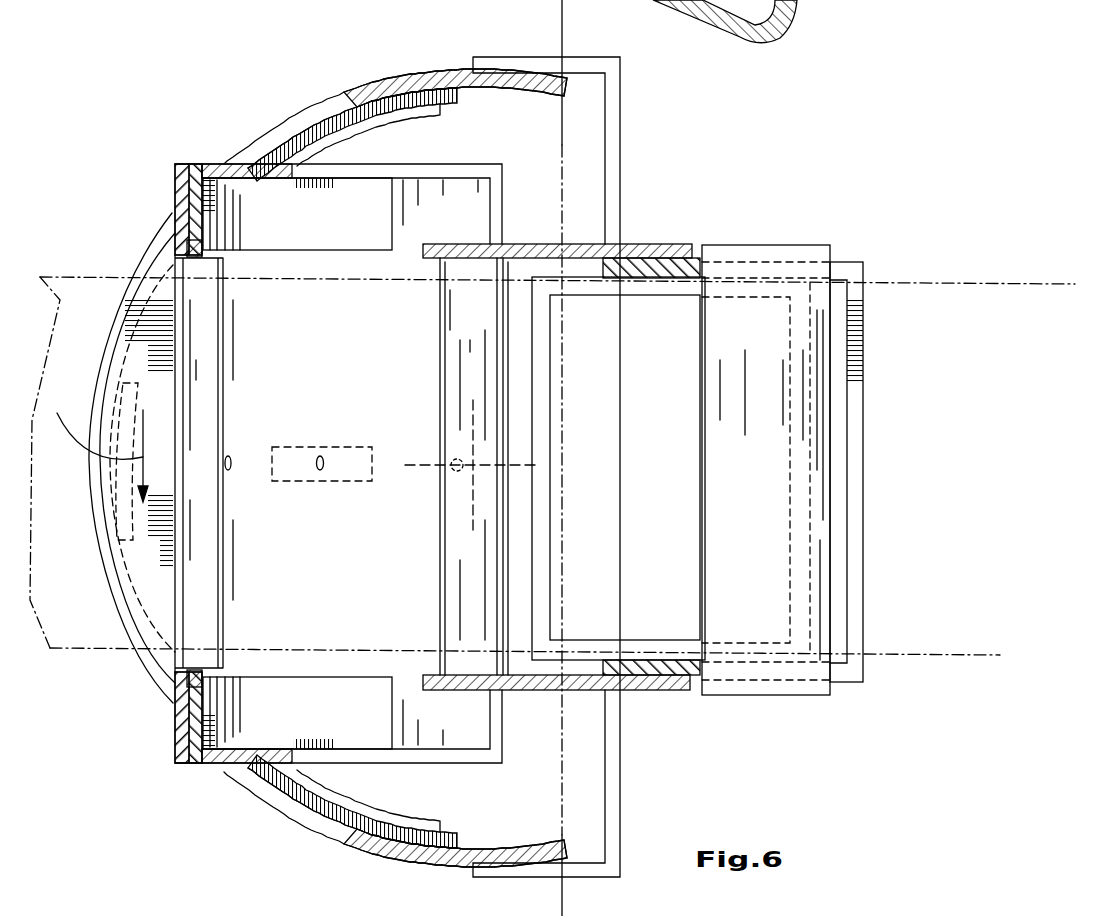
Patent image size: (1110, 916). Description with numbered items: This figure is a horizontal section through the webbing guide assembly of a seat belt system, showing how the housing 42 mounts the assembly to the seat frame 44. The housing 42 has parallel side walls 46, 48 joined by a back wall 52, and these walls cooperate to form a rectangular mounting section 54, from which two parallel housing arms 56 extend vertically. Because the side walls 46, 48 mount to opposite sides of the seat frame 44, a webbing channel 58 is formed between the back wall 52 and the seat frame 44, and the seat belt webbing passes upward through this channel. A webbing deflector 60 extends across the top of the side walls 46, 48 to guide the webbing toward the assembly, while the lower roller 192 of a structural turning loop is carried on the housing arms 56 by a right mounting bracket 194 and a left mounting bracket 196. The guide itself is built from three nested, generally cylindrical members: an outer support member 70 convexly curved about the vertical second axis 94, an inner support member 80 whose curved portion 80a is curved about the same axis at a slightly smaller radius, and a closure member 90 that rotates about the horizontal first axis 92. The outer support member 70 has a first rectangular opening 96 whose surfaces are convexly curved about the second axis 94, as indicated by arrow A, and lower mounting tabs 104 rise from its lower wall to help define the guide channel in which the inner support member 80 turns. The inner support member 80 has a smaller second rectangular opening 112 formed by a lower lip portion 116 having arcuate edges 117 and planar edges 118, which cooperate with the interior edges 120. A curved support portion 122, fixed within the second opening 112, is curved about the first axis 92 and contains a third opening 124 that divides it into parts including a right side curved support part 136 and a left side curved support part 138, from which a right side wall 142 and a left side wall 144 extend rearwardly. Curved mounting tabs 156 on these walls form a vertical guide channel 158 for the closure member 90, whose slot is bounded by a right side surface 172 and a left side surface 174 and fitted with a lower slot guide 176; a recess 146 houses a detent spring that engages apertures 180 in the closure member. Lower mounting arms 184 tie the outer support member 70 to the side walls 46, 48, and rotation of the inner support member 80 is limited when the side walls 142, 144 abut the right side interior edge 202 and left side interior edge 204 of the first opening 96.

The housing 42 is at (765, 188).
The seat frame 44 is at (542, 593).
The side wall 46 is at (836, 253).
The side wall 48 is at (845, 685).
The back wall 52 is at (852, 377).
The rectangular mounting section 54 is at (880, 690).
The housing arms 56 is at (665, 262).
The webbing channel 58 is at (837, 532).
The webbing deflector 60 is at (753, 653).
The outer support member 70 is at (397, 80).
The inner support member 80 is at (265, 780).
The curved portion 80a is at (310, 800).
The closure member 90 is at (180, 200).
The first axis 92 is at (563, 383).
The second axis 94 is at (475, 465).
The first elongated rectangular opening 96 is at (308, 92).
The lower mounting tabs 104 is at (110, 480).
The second elongated rectangular opening 112 is at (257, 163).
The lower lip portion 116 is at (93, 300).
The arcuate edges 117 is at (115, 565).
The planar edges 118 is at (128, 597).
The interior edges 120 is at (257, 183).
The curved support portion 122 is at (190, 763).
The third opening 124 is at (173, 247).
The right side curved support part 136 is at (173, 728).
The left side curved support part 138 is at (166, 171).
The right side wall 142 is at (478, 762).
The left side wall 144 is at (467, 173).
The recess 146 is at (290, 486).
The curved mounting tabs 156 is at (370, 205).
The vertical guide channel 158 is at (200, 257).
The right side surface 172 is at (203, 650).
The left side surface 174 is at (200, 272).
The lower slot guide 176 is at (190, 652).
The apertures 180 is at (230, 460).
The lower mounting arms 184 is at (610, 128).
The lower roller 192 is at (467, 268).
The right mounting bracket 194 is at (535, 693).
The left mounting bracket 196 is at (518, 253).
The right side interior edge 202 is at (345, 832).
The left side interior edge 204 is at (328, 100).
The arrow A is at (99, 445).